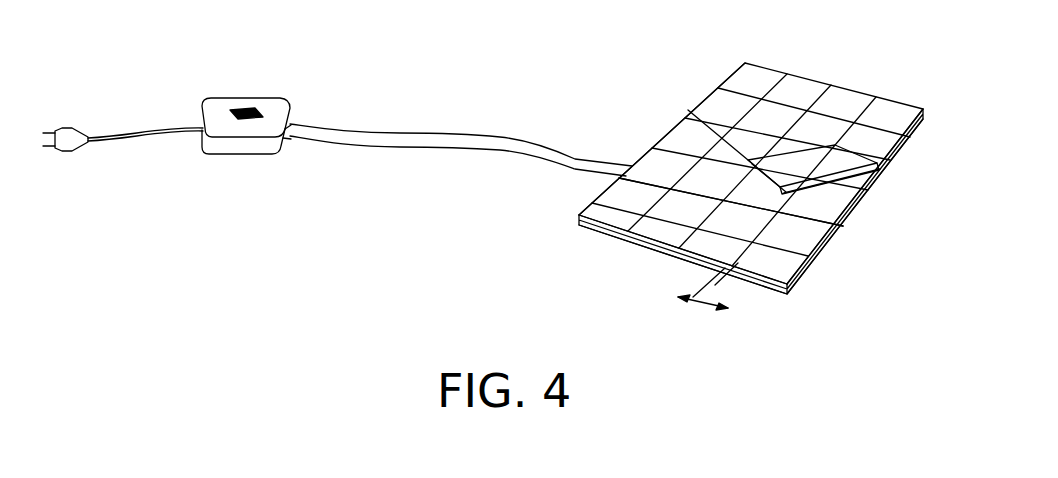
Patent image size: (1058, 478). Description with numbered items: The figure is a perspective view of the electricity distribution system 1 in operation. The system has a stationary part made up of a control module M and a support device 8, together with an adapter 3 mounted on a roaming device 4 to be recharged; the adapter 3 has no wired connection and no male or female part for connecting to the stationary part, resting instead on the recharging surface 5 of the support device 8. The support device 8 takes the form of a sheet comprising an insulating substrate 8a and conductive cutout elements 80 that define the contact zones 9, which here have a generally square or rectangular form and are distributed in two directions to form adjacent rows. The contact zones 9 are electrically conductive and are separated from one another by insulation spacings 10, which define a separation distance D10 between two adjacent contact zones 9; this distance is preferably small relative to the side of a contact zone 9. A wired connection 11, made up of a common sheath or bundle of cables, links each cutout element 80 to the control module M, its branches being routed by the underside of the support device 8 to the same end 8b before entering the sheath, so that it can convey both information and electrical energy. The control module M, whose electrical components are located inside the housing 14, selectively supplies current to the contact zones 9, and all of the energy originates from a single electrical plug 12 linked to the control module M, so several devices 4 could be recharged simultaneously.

The electricity distribution system 1 is at (382, 310).
The electrical plug 12 is at (73, 130).
The housing 14 is at (253, 98).
The control module M is at (243, 155).
The wired connection 11 is at (569, 168).
The support device 8 is at (818, 266).
The recharging surface 5 is at (843, 97).
The end 8b is at (655, 147).
The insulating substrate 8a is at (757, 276).
The cutout element 80 is at (612, 212).
The insulation spacing 10 is at (662, 230).
The separation distance D10 is at (698, 304).
The contact zone 9 is at (843, 195).
The adapter 3 is at (688, 110).
The roaming device 4 is at (893, 156).